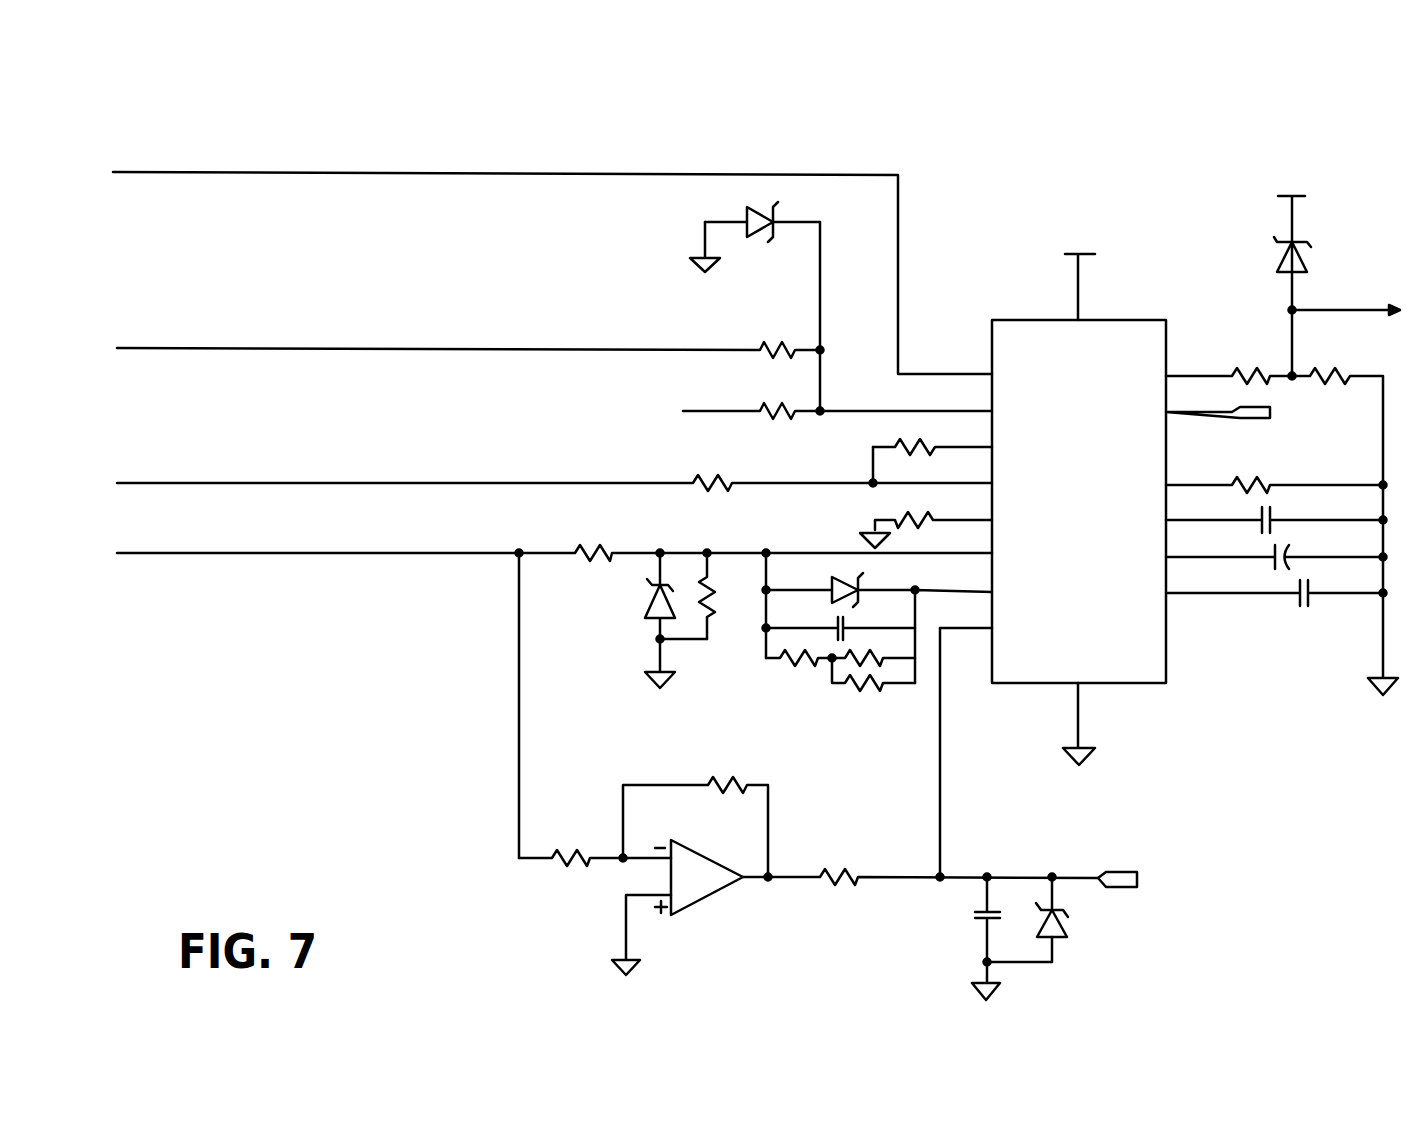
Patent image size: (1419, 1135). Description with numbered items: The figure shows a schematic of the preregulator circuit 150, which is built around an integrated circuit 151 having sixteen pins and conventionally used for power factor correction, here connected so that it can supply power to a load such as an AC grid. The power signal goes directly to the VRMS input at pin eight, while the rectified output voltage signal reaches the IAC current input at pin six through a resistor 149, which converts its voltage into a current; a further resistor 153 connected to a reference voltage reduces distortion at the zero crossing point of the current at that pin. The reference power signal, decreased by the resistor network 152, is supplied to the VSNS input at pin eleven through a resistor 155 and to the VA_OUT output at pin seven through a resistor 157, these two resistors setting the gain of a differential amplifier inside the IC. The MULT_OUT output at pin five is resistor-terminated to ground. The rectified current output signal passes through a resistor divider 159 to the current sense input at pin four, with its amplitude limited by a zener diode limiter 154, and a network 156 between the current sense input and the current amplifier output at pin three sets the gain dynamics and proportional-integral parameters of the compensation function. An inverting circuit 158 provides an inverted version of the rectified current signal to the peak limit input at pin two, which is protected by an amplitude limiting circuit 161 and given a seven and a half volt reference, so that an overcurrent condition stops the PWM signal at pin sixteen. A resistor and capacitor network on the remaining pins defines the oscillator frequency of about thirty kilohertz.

The resistor 149 is at (782, 345).
The preregulator circuit 150 is at (1005, 150).
The integrated circuit 151 is at (1195, 665).
The resistor network 152 is at (838, 460).
The further resistor 153 is at (782, 405).
The zener diode limiter 154 is at (628, 603).
The resistor 155 is at (712, 478).
The network 156 is at (780, 690).
The resistor 157 is at (918, 440).
The inverting circuit 158 is at (726, 930).
The resistor divider 159 is at (690, 535).
The amplitude limiting circuit 161 is at (1090, 965).